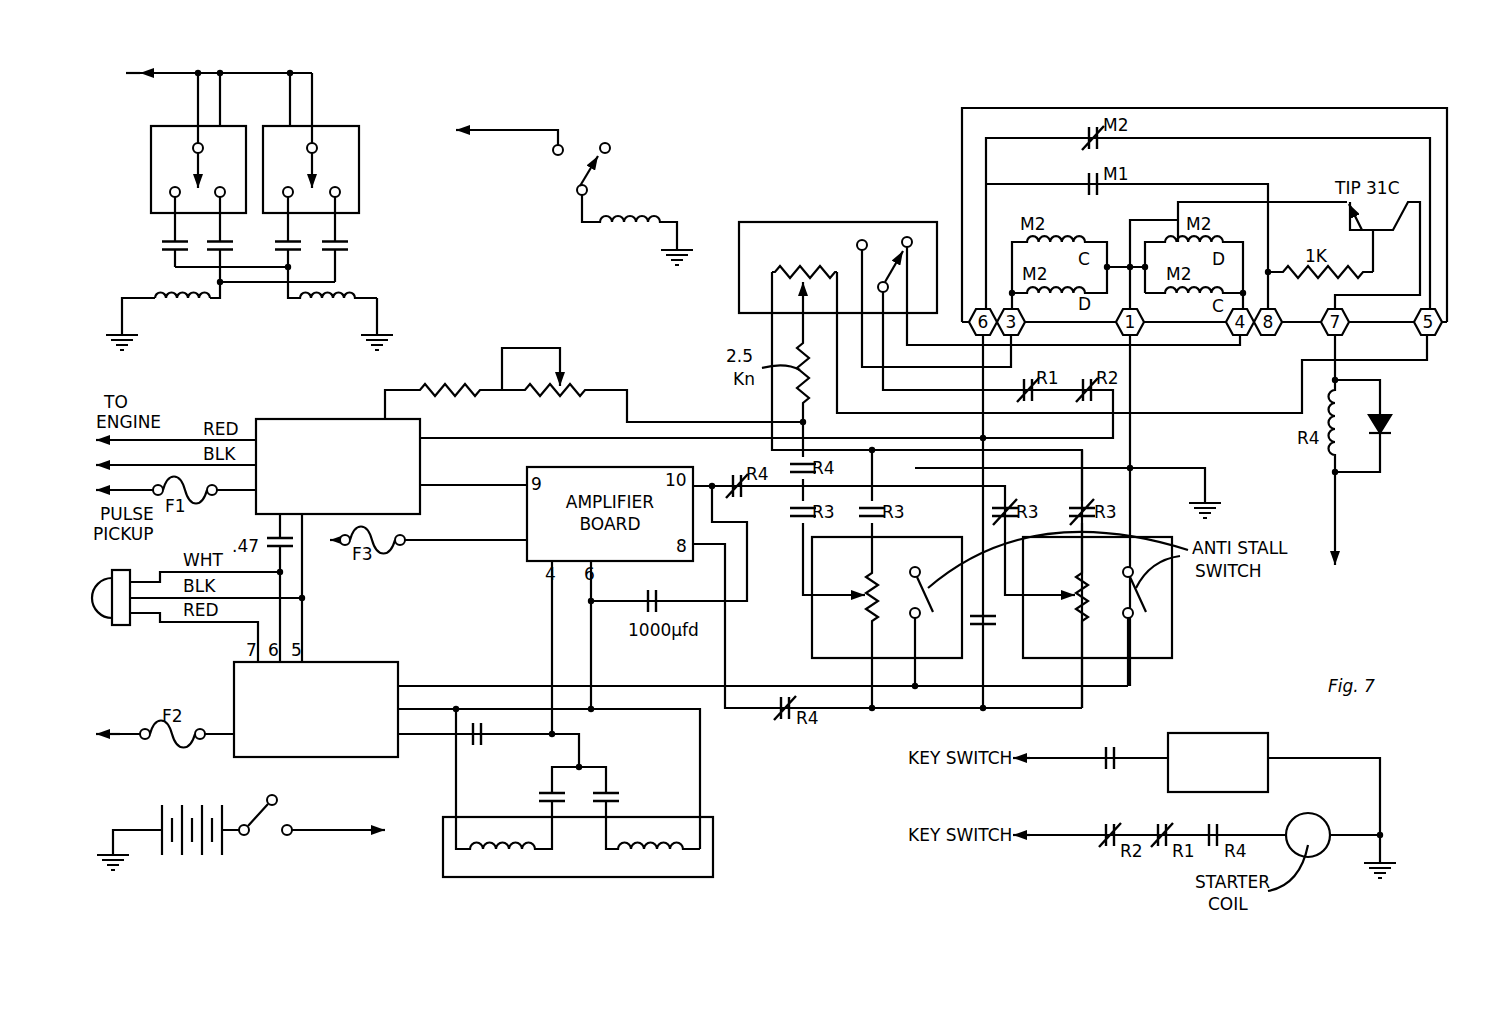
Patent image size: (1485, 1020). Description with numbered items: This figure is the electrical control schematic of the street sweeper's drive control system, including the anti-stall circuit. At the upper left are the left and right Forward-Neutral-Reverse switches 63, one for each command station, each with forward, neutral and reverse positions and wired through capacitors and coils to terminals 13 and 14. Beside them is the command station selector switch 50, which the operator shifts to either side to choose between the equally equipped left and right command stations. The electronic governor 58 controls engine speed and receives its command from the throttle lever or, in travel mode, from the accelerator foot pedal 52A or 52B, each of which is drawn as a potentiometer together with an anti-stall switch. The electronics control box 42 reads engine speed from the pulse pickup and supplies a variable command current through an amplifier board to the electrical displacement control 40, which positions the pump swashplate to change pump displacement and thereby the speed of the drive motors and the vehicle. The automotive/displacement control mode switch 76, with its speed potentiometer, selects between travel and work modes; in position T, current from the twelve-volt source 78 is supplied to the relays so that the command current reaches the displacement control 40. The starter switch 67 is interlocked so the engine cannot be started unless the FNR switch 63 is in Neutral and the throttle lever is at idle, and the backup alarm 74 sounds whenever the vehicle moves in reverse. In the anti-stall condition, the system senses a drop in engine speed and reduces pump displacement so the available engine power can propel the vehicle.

The Forward-Neutral-Reverse switch 63 is at (372, 155).
The coil terminal 13 is at (266, 296).
The coil terminal 14 is at (249, 314).
The command station selector switch 50 is at (630, 170).
The automotive/displacement control mode switch 76 is at (878, 222).
The electronic governor 58 is at (300, 419).
The electronics control box 42 is at (355, 662).
The 12-volt source 78 is at (208, 855).
The starter switch 67 is at (338, 838).
The electrical displacement control 40 is at (713, 852).
The accelerator foot pedal 52A is at (812, 656).
The accelerator foot pedal 52B is at (1172, 643).
The backup alarm 74 is at (1252, 733).